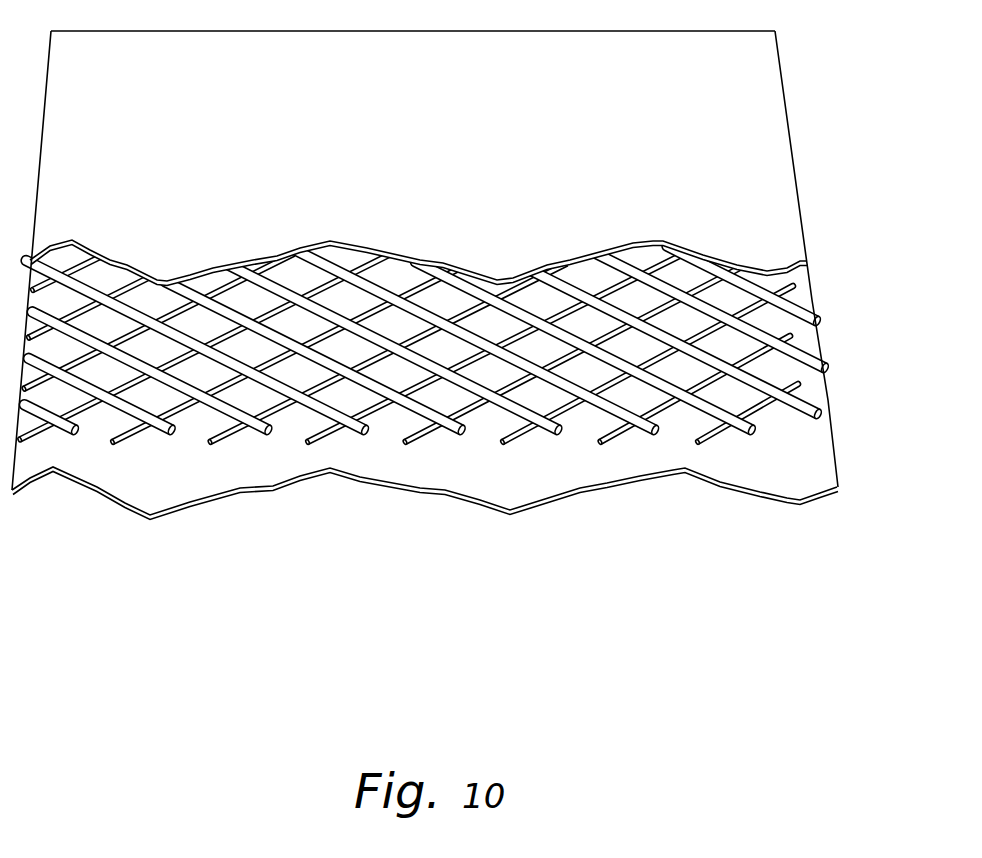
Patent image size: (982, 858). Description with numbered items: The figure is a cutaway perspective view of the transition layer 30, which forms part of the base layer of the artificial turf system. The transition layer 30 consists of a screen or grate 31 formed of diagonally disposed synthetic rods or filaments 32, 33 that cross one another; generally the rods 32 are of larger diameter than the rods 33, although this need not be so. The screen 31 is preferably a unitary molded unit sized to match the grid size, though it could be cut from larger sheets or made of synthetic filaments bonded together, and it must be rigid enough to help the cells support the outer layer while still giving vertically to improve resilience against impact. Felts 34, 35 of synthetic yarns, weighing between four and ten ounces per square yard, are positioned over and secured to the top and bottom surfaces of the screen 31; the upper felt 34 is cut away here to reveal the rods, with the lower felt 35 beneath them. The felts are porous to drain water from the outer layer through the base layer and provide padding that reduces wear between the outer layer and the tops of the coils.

The transition layer 30 is at (459, 285).
The screen or grate 31 is at (457, 389).
The synthetic rods or filaments 32 is at (815, 408).
The synthetic rods or filaments 33 is at (757, 413).
The felt 34 is at (775, 142).
The felt 35 is at (602, 468).